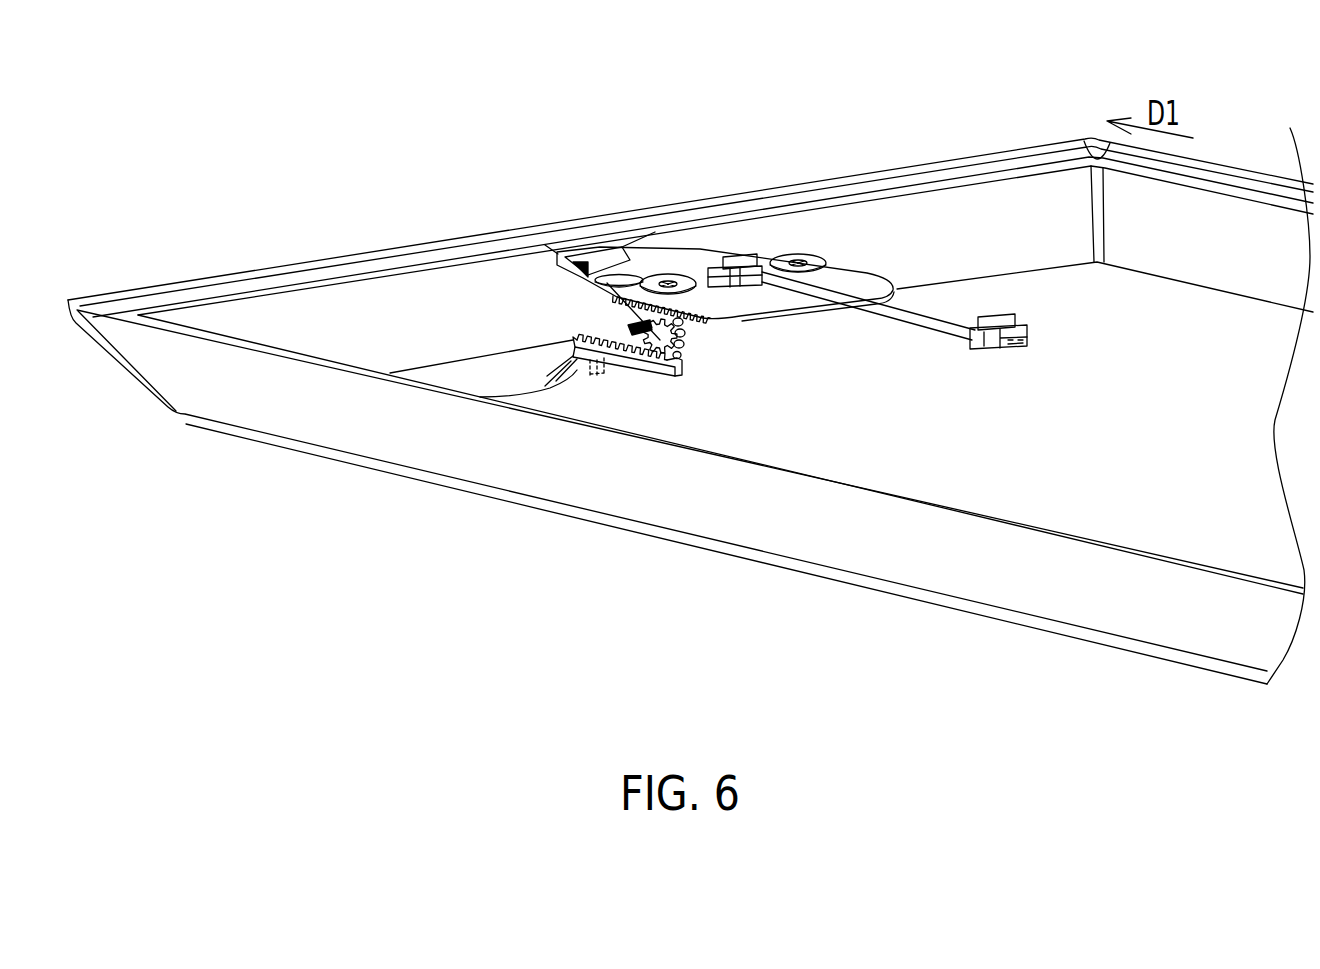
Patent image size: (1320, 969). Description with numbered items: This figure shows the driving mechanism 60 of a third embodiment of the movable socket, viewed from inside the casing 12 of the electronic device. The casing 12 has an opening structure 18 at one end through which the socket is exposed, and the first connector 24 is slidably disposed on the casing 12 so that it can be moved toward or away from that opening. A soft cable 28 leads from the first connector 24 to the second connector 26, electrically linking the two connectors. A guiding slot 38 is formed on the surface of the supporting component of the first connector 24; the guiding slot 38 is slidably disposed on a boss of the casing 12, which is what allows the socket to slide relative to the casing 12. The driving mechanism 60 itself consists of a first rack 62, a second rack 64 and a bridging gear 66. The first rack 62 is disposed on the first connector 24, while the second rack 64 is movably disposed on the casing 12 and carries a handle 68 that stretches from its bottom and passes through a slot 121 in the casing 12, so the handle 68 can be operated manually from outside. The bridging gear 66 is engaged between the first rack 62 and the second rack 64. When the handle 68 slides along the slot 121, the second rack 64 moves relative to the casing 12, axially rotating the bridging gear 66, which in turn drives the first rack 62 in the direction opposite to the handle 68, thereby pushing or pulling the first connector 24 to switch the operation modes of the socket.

The casing 12 is at (942, 453).
The slot 121 is at (481, 398).
The opening structure 18 is at (631, 312).
The first connector 24 is at (845, 271).
The second connector 26 is at (1005, 316).
The soft cable 28 is at (926, 323).
The guiding slot 38 is at (612, 281).
The driving mechanism 60 is at (641, 483).
The first rack 62 is at (707, 322).
The second rack 64 is at (603, 358).
The bridging gear 66 is at (613, 356).
The handle 68 is at (563, 375).